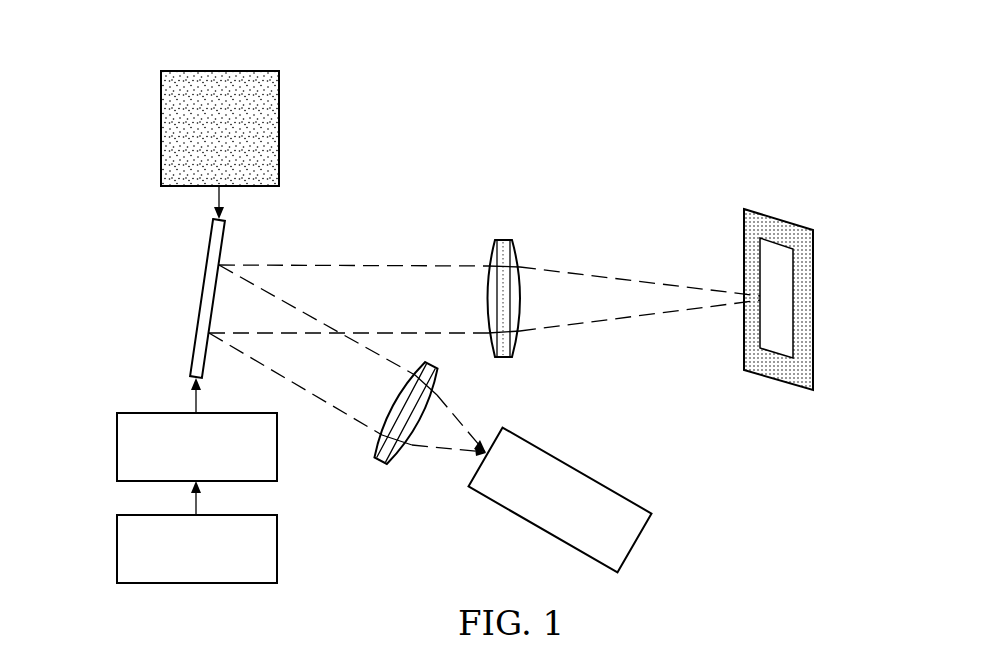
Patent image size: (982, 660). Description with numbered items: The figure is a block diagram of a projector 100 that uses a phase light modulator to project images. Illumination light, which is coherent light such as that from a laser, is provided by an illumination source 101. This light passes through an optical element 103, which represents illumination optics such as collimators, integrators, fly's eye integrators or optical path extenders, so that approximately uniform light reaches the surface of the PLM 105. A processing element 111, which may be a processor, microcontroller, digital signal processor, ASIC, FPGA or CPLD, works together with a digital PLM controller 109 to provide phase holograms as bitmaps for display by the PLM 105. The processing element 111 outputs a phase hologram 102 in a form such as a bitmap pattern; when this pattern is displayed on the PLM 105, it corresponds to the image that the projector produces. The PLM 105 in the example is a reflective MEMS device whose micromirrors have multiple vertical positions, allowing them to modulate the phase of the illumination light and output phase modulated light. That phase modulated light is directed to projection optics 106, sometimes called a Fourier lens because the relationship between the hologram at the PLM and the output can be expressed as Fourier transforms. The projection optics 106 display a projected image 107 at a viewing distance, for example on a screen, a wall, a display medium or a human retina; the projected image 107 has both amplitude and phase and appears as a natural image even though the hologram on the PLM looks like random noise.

The projector 100 is at (640, 93).
The illumination source 101 is at (545, 532).
The phase hologram 102 is at (161, 127).
The optical element 103 is at (375, 463).
The PLM 105 is at (203, 300).
The projection optics 106 is at (505, 240).
The projected image 107 is at (813, 312).
The digital PLM controller 109 is at (117, 448).
The processing element 111 is at (117, 550).